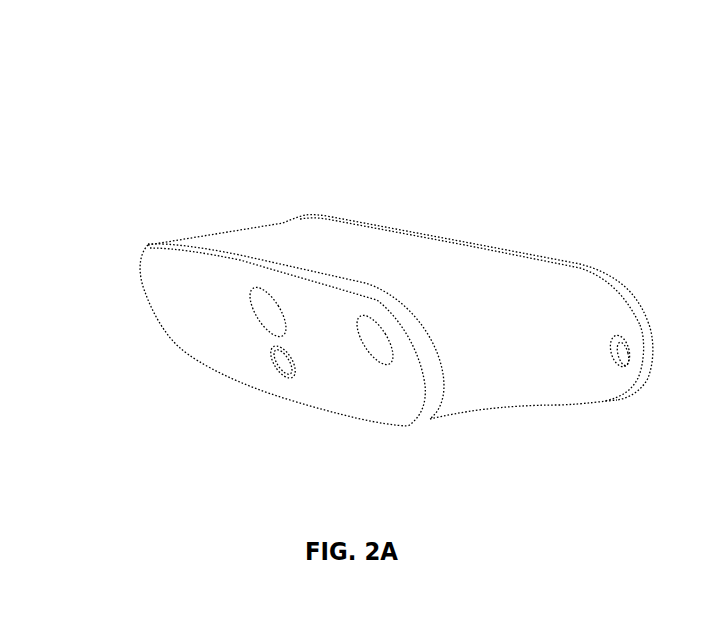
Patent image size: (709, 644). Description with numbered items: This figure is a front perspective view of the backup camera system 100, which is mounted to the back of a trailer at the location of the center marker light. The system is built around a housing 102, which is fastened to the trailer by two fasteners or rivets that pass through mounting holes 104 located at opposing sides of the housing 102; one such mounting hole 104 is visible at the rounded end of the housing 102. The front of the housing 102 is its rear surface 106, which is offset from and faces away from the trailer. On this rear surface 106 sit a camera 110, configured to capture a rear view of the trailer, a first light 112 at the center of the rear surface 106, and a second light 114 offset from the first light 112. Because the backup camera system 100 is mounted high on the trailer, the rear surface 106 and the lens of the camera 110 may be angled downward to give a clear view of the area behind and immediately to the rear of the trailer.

The backup camera system 100 is at (367, 256).
The housing 102 is at (477, 270).
The mounting holes 104 is at (622, 355).
The rear surface 106 is at (200, 352).
The camera 110 is at (277, 367).
The first light 112 is at (260, 313).
The second light 114 is at (372, 343).